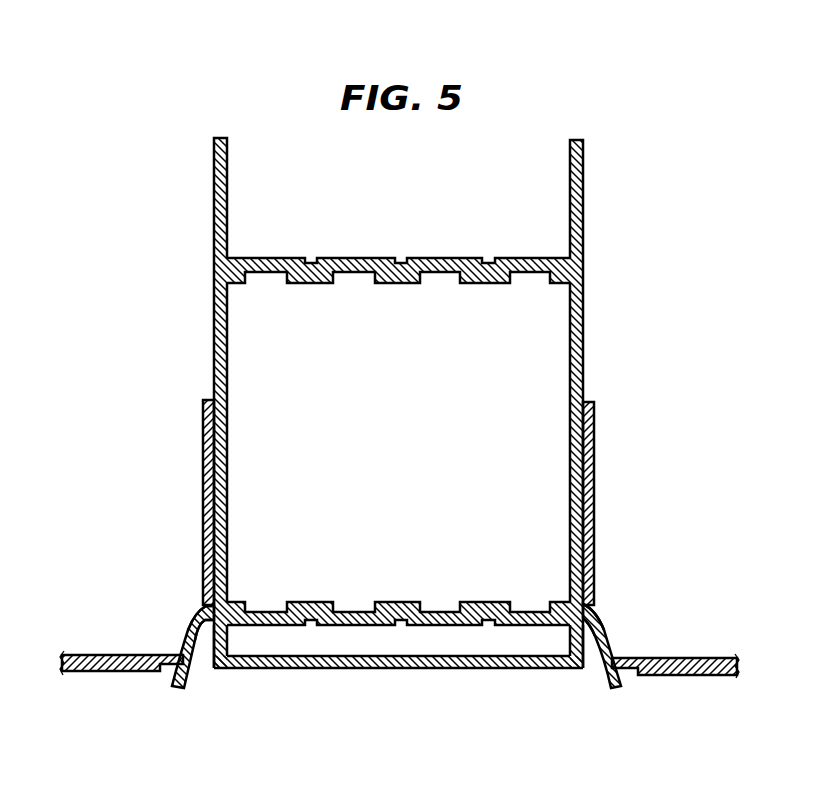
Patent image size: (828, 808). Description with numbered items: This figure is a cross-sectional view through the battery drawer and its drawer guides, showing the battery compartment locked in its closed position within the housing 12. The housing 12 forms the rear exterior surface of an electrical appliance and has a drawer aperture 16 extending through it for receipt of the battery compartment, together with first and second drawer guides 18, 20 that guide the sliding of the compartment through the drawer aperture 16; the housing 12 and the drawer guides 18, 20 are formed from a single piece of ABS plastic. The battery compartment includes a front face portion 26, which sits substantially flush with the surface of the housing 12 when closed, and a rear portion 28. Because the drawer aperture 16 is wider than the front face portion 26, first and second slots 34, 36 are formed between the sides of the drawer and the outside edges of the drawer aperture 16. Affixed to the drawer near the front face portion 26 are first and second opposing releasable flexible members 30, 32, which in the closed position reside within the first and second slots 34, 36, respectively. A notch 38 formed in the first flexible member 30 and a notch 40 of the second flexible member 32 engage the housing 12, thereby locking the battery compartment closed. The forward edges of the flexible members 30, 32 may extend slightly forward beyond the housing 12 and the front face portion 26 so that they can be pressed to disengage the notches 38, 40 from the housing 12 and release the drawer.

The housing 12 is at (96, 684).
The drawer aperture 16 is at (213, 663).
The first drawer guide 18 is at (203, 514).
The second drawer guide 20 is at (594, 470).
The front face portion 26 is at (433, 668).
The rear portion 28 is at (439, 258).
The first flexible member 30 is at (175, 685).
The second flexible member 32 is at (618, 680).
The first slot 34 is at (202, 663).
The second slot 36 is at (595, 660).
The notch 38 is at (182, 648).
The notch 40 is at (607, 640).